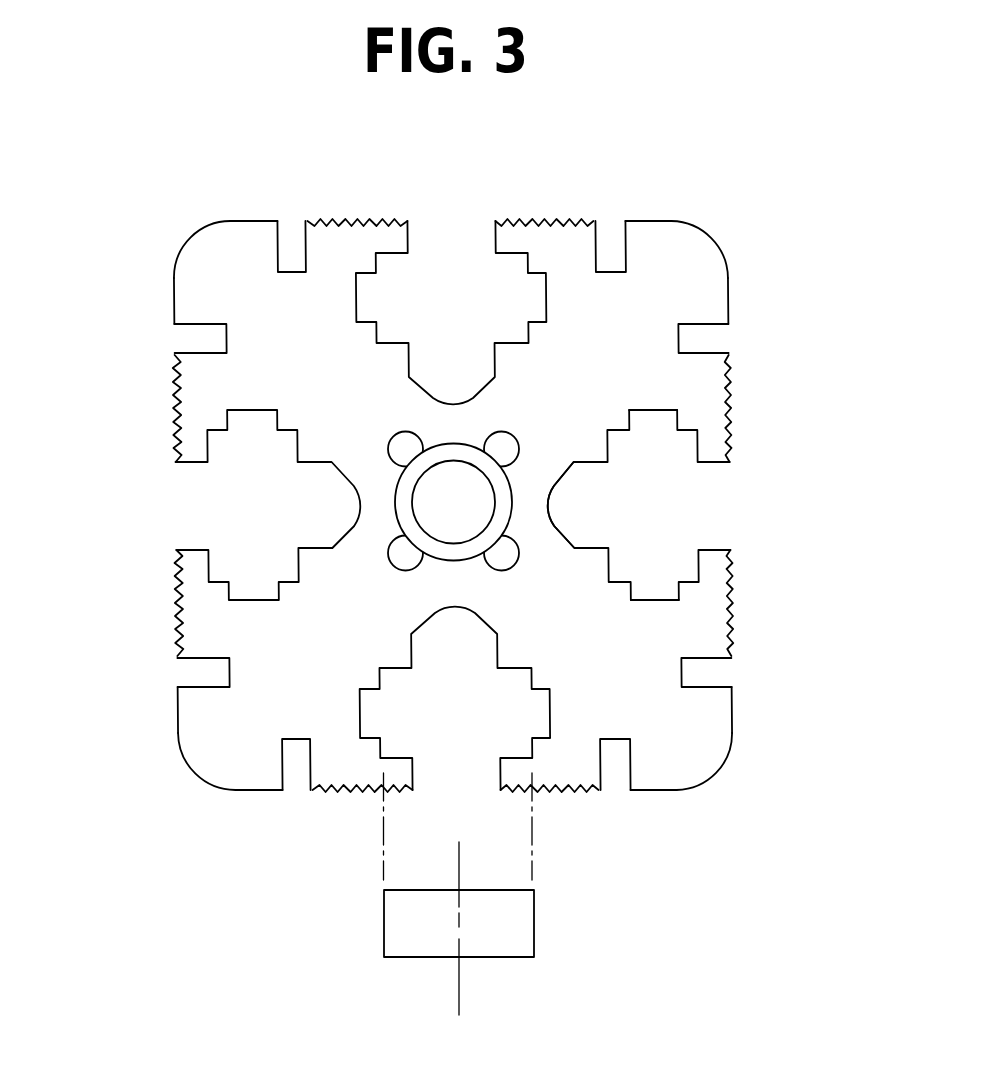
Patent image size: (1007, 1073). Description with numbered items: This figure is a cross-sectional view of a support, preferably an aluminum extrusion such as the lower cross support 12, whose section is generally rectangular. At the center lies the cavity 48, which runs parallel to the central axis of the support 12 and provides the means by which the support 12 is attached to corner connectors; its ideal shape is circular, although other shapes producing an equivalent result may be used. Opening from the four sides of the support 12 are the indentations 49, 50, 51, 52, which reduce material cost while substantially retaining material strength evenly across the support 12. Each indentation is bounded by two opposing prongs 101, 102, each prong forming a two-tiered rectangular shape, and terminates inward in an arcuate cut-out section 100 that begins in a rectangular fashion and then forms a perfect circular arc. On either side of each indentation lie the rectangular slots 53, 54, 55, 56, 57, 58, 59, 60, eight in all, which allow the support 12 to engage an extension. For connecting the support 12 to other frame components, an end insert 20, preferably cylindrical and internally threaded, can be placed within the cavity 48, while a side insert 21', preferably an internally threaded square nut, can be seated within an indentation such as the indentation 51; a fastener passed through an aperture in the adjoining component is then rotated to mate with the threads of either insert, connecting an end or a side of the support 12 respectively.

The lower cross support 12 is at (155, 215).
The end insert 20 is at (488, 541).
The side insert 21' is at (489, 895).
The cavity 48 is at (401, 556).
The indentation 49 is at (475, 321).
The indentation 50 is at (677, 518).
The indentation 51 is at (481, 730).
The indentation 52 is at (275, 520).
The slot 53 is at (166, 339).
The slot 54 is at (289, 213).
The slot 55 is at (613, 213).
The slot 56 is at (738, 339).
The slot 57 is at (740, 668).
The slot 58 is at (618, 797).
The slot 59 is at (297, 797).
The slot 60 is at (170, 670).
The arcuate cut-out section 100 is at (557, 498).
The prong 101 is at (656, 404).
The prong 102 is at (657, 601).